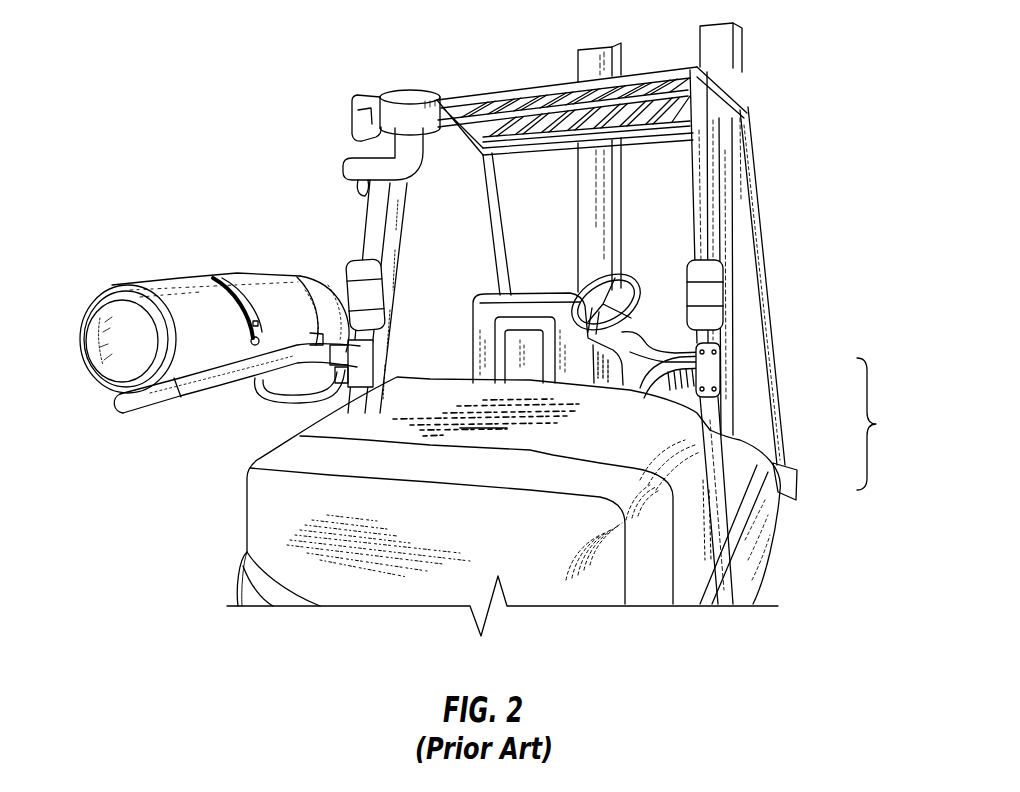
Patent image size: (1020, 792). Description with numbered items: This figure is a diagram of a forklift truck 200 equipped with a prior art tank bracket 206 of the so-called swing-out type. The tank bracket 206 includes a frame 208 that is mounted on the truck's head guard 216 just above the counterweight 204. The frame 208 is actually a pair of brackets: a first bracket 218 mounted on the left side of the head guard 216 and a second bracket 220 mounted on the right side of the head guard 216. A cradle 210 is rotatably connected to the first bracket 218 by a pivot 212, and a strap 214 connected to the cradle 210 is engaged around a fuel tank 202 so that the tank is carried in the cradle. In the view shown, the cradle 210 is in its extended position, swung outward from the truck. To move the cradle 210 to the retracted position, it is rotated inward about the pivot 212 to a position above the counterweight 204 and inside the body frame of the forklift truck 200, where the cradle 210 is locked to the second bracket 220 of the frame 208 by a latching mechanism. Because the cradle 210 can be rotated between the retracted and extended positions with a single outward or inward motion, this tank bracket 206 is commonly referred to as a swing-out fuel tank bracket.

The forklift truck 200 is at (446, 45).
The fuel tank 202 is at (108, 290).
The counterweight 204 is at (258, 520).
The tank bracket 206 is at (215, 419).
The frame 208 is at (645, 337).
The cradle 210 is at (120, 405).
The pivot 212 is at (343, 340).
The strap 214 is at (213, 275).
The head guard 216 is at (367, 227).
The first bracket 218 is at (363, 357).
The second bracket 220 is at (715, 380).